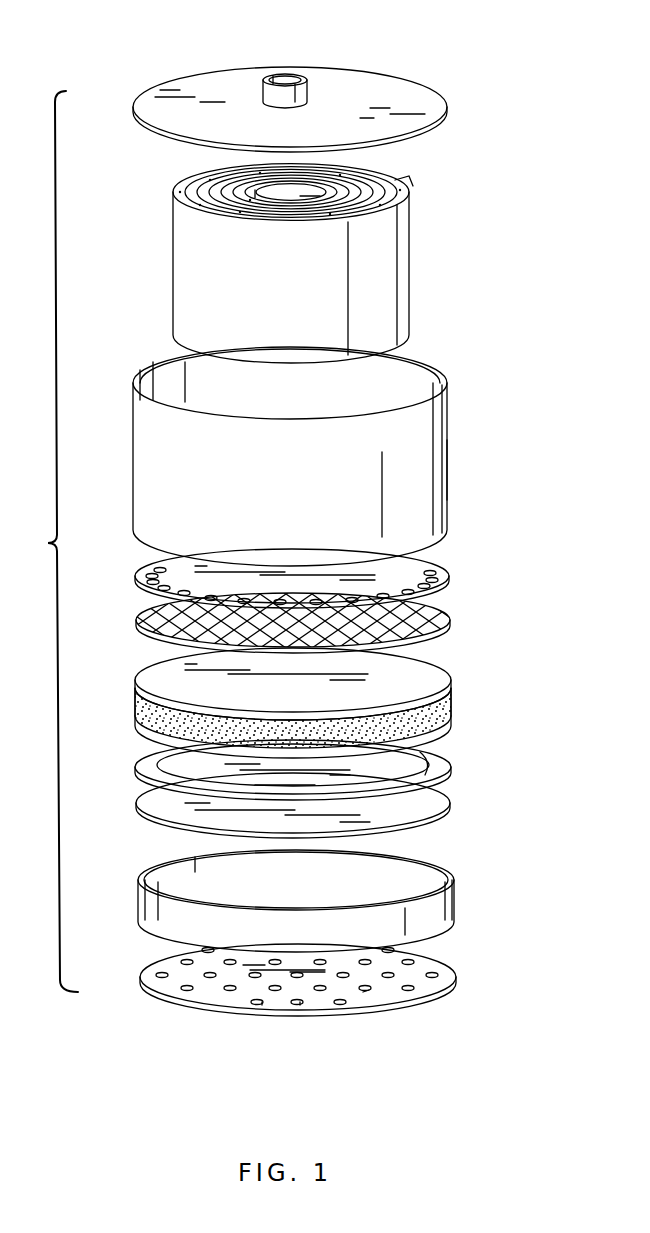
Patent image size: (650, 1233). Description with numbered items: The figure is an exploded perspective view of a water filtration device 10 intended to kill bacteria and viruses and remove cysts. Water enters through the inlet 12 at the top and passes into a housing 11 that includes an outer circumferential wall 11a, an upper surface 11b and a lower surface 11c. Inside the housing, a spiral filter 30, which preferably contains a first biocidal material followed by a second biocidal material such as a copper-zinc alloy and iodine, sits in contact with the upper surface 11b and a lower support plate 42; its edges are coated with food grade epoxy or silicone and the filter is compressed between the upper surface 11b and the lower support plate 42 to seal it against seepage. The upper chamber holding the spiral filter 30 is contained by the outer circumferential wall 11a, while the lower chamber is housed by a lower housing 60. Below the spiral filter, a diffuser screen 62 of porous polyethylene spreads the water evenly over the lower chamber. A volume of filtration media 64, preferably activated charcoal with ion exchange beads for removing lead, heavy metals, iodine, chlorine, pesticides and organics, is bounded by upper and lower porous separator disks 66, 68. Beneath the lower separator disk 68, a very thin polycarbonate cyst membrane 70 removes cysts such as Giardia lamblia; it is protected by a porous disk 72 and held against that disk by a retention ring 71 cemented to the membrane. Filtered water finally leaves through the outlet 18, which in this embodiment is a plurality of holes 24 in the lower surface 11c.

The water filtration device 10 is at (43, 541).
The housing 11 is at (448, 418).
The outer circumferential wall 11a is at (448, 484).
The upper surface 11b is at (405, 88).
The lower surface 11c is at (457, 978).
The inlet 12 is at (293, 77).
The outlet 18 is at (363, 992).
The holes 24 is at (262, 1006).
The spiral filter 30 is at (410, 251).
The lower support plate 42 is at (452, 571).
The lower housing 60 is at (457, 900).
The diffuser screen 62 is at (452, 612).
The filtration media 64 is at (452, 705).
The upper porous separator disk 66 is at (445, 670).
The lower porous separator disk 68 is at (453, 725).
The cyst membrane 70 is at (190, 758).
The retention ring 71 is at (437, 772).
The porous disk 72 is at (447, 818).